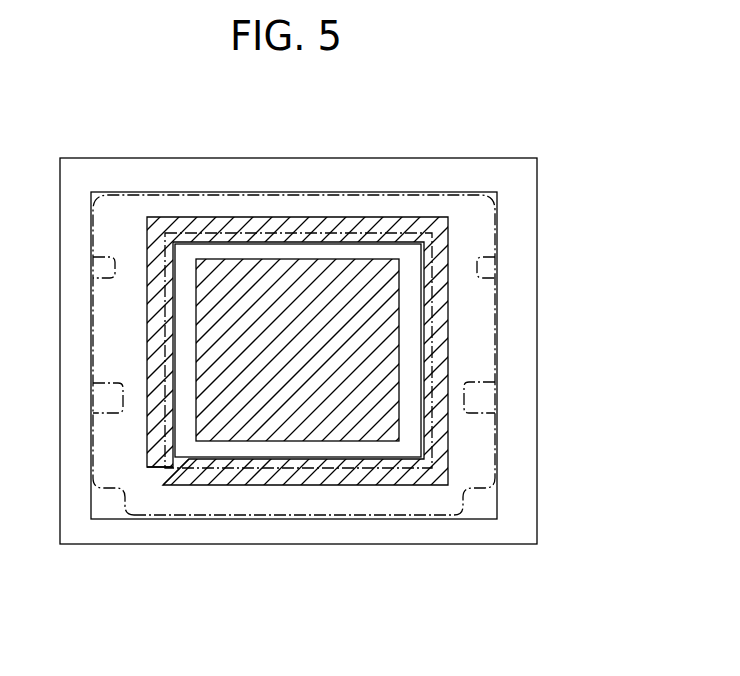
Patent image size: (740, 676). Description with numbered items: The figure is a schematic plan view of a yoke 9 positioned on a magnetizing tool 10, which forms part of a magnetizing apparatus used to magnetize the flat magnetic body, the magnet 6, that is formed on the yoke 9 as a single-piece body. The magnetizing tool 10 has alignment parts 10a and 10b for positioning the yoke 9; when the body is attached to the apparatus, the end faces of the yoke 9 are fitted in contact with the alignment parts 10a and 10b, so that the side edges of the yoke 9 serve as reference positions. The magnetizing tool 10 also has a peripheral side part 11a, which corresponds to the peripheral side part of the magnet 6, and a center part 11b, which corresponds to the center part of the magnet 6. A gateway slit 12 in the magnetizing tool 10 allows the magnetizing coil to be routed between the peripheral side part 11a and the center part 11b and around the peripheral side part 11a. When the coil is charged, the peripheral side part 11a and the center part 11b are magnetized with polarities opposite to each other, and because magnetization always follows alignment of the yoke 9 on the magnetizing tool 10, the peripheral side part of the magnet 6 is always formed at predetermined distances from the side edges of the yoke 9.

The magnet 6 is at (310, 232).
The yoke 9 is at (498, 193).
The magnetizing tool 10 is at (522, 514).
The alignment part 10a is at (307, 519).
The alignment part 10b is at (488, 299).
The peripheral side part 11a is at (440, 432).
The center part 11b is at (350, 422).
The gateway slit 12 is at (242, 458).